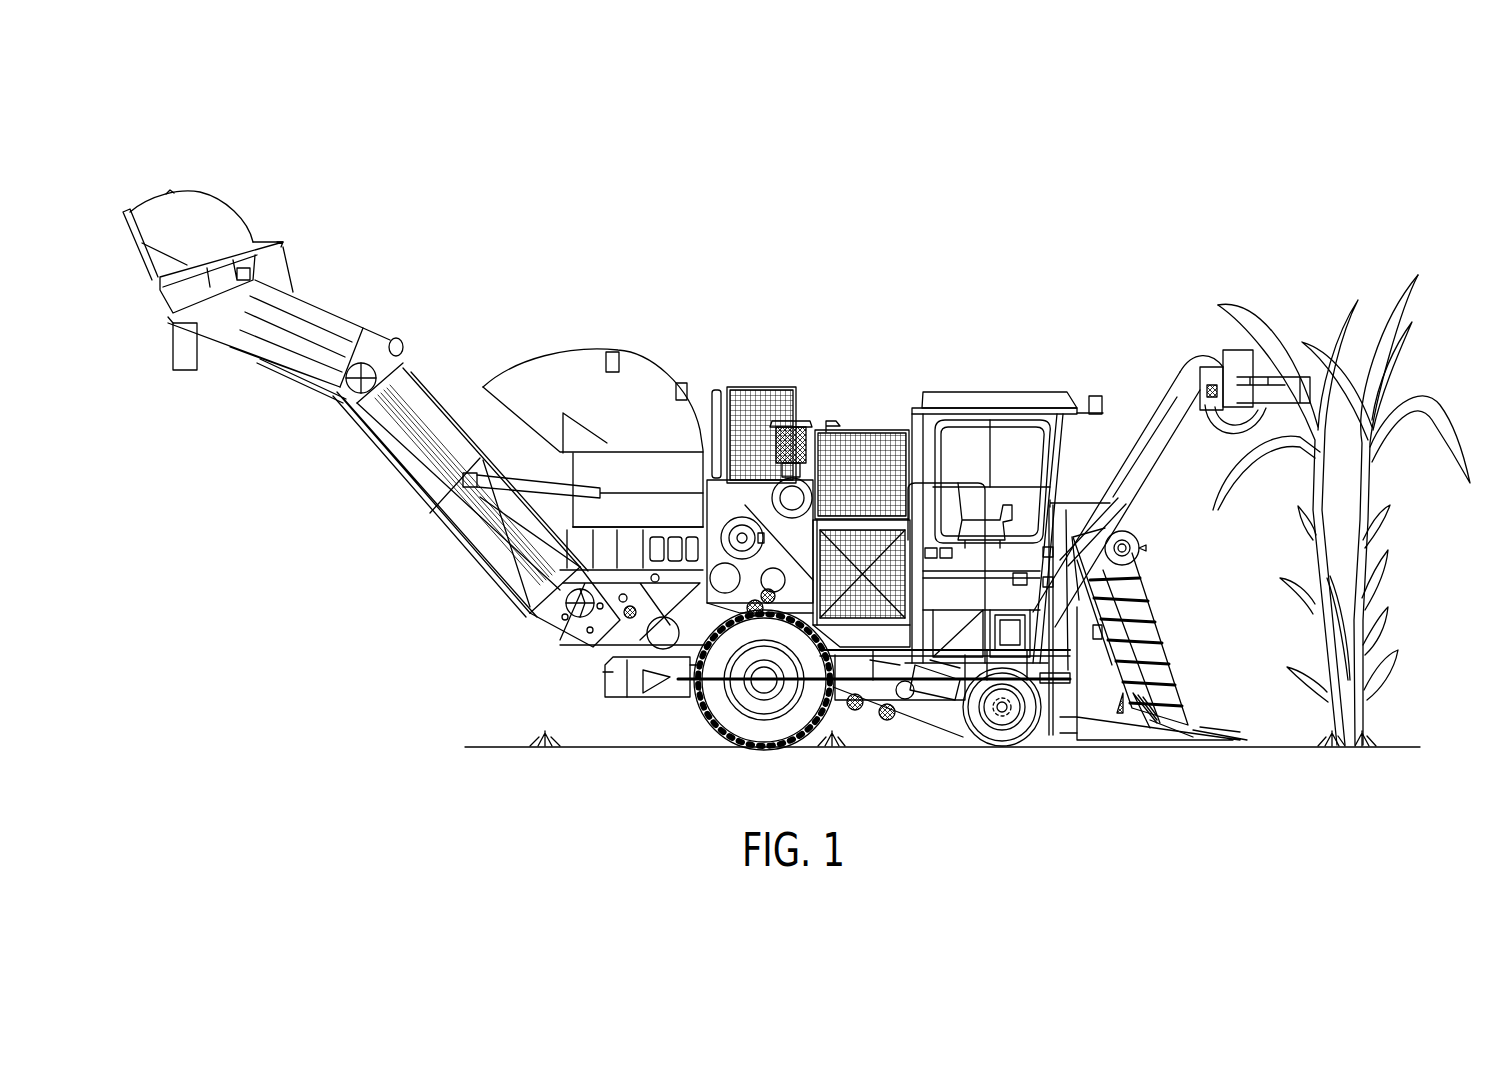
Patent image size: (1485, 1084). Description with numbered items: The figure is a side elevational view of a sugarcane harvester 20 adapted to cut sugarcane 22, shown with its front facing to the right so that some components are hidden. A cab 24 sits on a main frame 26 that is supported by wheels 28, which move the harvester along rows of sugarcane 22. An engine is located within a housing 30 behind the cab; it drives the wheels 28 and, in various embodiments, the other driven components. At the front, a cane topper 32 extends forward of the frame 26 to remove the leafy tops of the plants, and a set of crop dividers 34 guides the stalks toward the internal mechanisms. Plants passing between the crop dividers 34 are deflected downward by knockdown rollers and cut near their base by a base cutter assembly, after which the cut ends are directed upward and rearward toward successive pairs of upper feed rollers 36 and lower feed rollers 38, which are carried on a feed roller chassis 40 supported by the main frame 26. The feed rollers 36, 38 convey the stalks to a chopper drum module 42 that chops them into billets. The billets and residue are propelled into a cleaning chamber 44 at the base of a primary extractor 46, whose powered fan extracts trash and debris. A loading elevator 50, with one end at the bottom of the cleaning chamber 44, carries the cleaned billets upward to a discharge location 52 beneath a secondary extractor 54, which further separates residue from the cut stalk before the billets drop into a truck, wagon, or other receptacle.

The sugarcane harvester 20 is at (906, 294).
The sugarcane 22 is at (1348, 270).
The cab 24 is at (985, 402).
The main frame 26 is at (662, 720).
The wheels 28 is at (762, 728).
The housing 30 is at (868, 525).
The cane topper 32 is at (1225, 365).
The crop dividers 34 is at (1125, 698).
The upper feed rollers 36 is at (777, 567).
The lower feed rollers 38 is at (810, 598).
The feed roller chassis 40 is at (826, 645).
The chopper drum module 42 is at (712, 605).
The cleaning chamber 44 is at (612, 542).
The primary extractor 46 is at (517, 330).
The loading elevator 50 is at (348, 475).
The discharge location 52 is at (145, 322).
The secondary extractor 54 is at (204, 208).